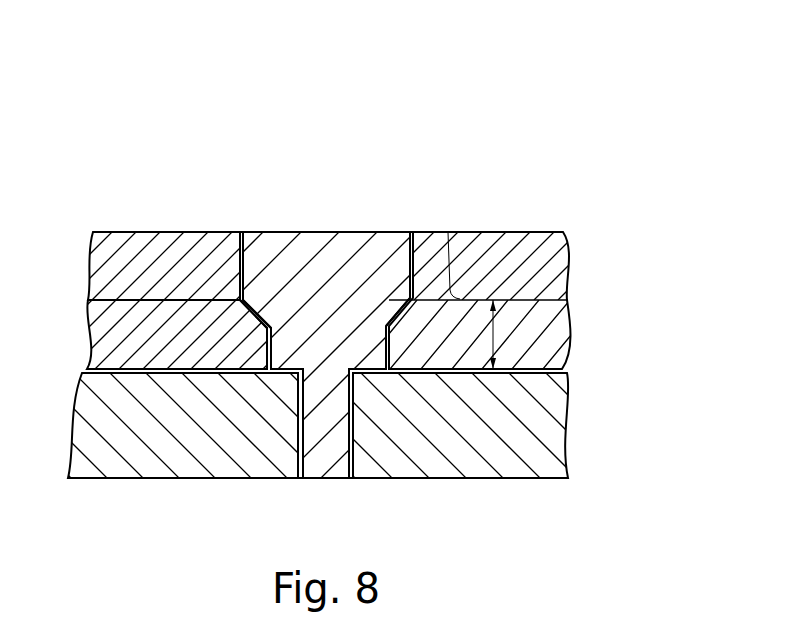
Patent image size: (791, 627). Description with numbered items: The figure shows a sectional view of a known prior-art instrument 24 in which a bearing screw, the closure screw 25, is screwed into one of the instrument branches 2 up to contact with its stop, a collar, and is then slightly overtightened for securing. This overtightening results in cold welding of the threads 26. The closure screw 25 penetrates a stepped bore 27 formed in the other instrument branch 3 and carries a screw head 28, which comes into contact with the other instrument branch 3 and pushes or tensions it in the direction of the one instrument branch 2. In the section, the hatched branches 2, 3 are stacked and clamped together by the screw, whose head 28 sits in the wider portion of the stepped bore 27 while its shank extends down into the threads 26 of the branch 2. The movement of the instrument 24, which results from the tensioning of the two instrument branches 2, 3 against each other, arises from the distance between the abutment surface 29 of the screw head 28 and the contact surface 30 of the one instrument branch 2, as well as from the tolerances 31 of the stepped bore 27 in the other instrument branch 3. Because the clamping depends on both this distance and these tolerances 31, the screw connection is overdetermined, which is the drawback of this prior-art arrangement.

The instrument branch 2 is at (157, 462).
The other instrument branch 3 is at (215, 258).
The instrument 24 is at (113, 101).
The closure screw 25 is at (317, 231).
The threads 26 is at (360, 420).
The stepped bore 27 is at (450, 298).
The screw head 28 is at (368, 258).
The abutment surface 29 is at (248, 319).
The contact surface 30 is at (232, 358).
The tolerances 31 is at (495, 337).